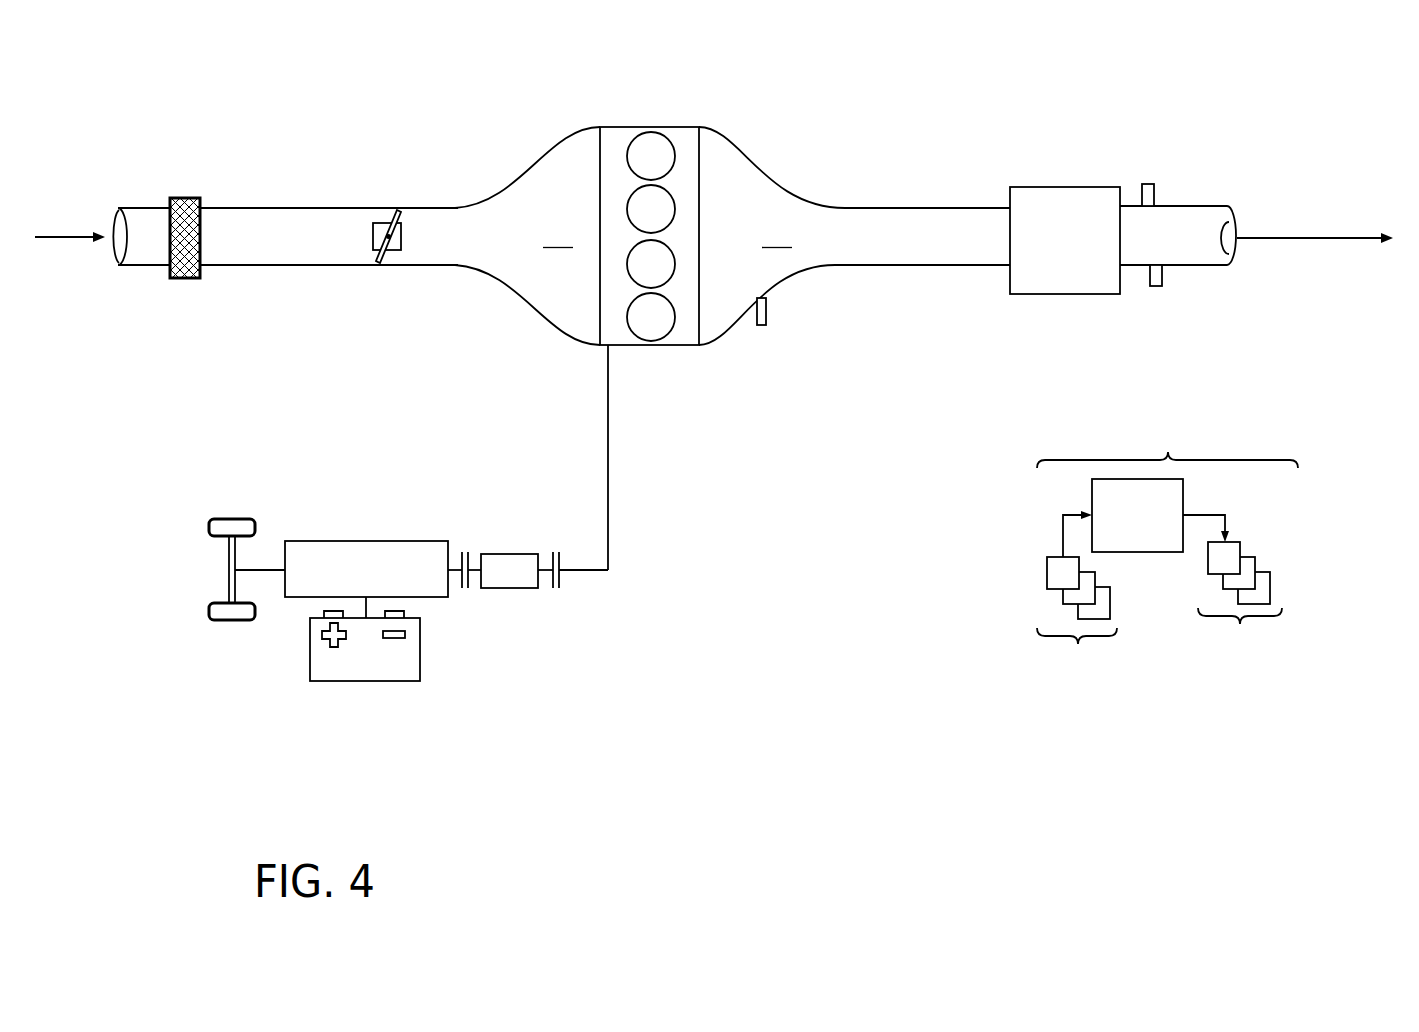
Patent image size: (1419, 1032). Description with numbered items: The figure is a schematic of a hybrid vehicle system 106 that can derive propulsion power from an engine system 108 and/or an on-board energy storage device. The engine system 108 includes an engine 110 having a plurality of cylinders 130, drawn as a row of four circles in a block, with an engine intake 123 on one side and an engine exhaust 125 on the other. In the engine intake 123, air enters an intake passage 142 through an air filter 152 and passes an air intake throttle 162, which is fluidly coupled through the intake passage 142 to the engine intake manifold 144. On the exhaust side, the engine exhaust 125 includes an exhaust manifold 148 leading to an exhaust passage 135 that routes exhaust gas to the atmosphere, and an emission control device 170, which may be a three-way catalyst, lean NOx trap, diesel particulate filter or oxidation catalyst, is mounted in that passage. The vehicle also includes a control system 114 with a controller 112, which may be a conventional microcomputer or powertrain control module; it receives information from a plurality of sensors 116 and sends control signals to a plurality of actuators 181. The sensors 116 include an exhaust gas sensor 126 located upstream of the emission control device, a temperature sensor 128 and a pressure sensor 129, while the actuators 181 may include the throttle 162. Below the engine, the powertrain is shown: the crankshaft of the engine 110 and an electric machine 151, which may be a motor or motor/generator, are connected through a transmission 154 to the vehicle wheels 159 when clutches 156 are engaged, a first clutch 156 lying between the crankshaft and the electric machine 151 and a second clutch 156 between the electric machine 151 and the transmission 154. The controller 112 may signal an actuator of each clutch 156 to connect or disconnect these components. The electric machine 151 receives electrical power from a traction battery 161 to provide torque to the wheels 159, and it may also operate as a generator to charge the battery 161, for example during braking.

The hybrid vehicle system 106 is at (135, 105).
The engine system 108 is at (1258, 100).
The engine 110 is at (699, 218).
The controller 112 is at (1146, 518).
The control system 114 is at (1167, 544).
The sensors 116 is at (1077, 620).
The engine intake 123 is at (523, 157).
The engine exhaust 125 is at (818, 162).
The exhaust gas sensor 126 is at (766, 304).
The temperature sensor 128 is at (1157, 286).
The pressure sensor 129 is at (1150, 184).
The cylinders 130 is at (675, 150).
The exhaust passage 135 is at (1200, 206).
The intake passage 142 is at (147, 268).
The engine intake manifold 144 is at (558, 236).
The exhaust manifold 148 is at (777, 236).
The electric machine 151 is at (512, 590).
The air filter 152 is at (190, 198).
The transmission 154 is at (310, 598).
The clutches 156 is at (468, 557).
The vehicle wheels 159 is at (233, 622).
The traction battery 161 is at (376, 683).
The air intake throttle 162 is at (402, 245).
The emission control device 170 is at (1050, 187).
The actuators 181 is at (1240, 604).